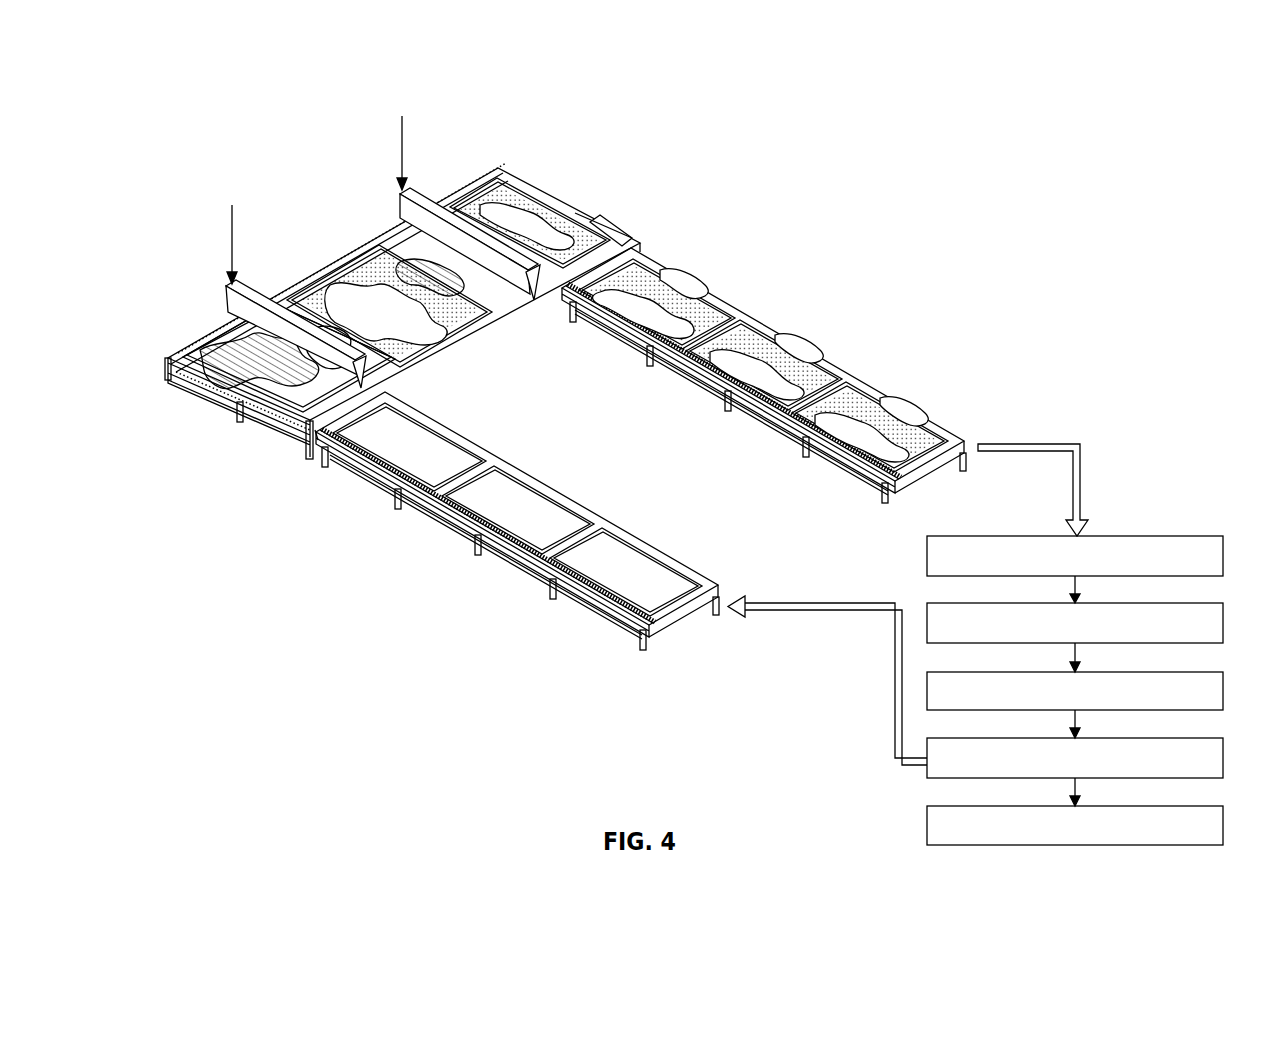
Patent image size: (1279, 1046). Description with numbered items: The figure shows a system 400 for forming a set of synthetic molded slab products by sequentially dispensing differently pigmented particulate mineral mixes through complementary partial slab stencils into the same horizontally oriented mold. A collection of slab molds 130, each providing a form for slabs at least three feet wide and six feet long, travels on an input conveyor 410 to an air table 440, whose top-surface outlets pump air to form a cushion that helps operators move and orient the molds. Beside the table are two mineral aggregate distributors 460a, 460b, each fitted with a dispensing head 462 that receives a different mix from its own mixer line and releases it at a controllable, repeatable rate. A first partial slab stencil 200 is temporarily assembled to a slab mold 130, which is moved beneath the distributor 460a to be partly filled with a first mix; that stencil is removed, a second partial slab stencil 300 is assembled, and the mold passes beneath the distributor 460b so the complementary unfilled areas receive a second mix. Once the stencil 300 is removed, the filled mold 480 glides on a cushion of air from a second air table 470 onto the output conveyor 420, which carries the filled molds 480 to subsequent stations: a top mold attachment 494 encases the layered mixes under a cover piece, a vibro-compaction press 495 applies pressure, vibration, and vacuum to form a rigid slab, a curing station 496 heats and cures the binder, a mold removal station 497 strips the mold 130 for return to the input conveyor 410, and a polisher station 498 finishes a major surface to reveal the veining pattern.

The system 400 is at (176, 112).
The slab mold 130 is at (462, 188).
The partial slab stencil 200 is at (207, 334).
The partial slab stencil 300 is at (498, 322).
The input conveyor 410 is at (704, 576).
The output conveyor 420 is at (854, 378).
The air table 440 is at (186, 364).
The mineral aggregate distributor 460a is at (234, 289).
The mineral aggregate distributor 460b is at (398, 190).
The dispensing head 462 is at (226, 300).
The air table 470 is at (626, 245).
The filled mold 480 is at (704, 292).
The top mold attachment 494 is at (927, 556).
The vibro-compaction press 495 is at (927, 612).
The curing station 496 is at (934, 655).
The mold removal station 497 is at (927, 774).
The polisher station 498 is at (927, 840).